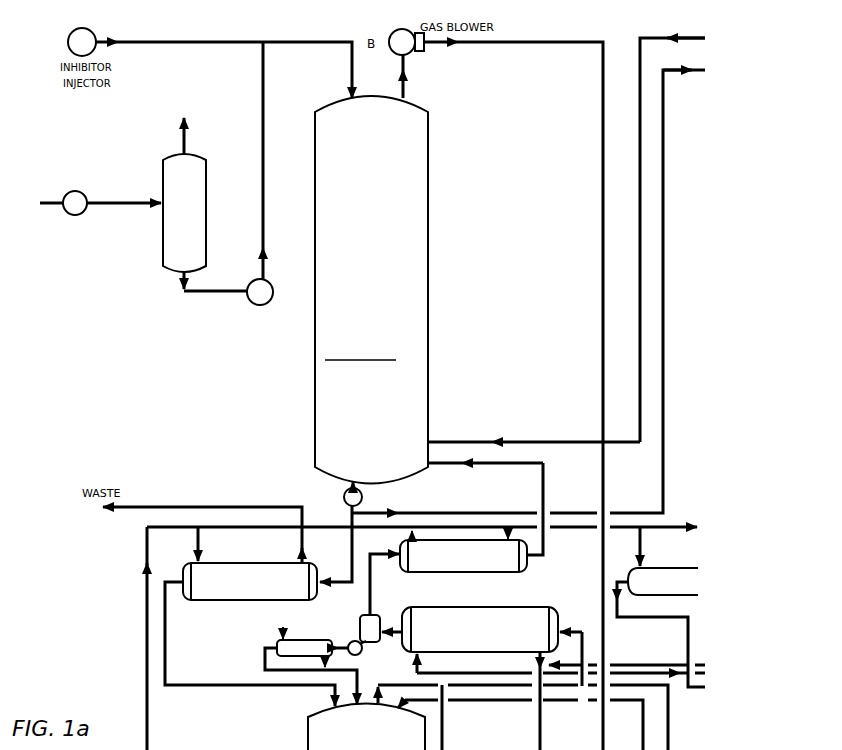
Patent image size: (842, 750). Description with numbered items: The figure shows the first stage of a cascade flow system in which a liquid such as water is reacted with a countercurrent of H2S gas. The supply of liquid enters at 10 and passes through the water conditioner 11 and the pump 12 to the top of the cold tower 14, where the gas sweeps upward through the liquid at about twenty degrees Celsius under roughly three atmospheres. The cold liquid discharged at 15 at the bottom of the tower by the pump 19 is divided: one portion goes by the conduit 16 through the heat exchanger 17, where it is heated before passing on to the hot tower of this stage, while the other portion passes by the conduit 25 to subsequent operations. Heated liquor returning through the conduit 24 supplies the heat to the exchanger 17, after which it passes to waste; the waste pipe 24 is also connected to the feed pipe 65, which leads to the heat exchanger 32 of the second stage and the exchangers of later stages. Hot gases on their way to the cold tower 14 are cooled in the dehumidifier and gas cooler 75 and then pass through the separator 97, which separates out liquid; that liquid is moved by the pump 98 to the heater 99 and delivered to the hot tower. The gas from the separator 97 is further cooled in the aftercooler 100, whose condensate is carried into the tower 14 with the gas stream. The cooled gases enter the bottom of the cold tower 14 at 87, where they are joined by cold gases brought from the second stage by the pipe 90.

The liquid supply entry 10 is at (94, 190).
The water conditioner 11 is at (196, 176).
The pump 12 is at (272, 289).
The cold tower 14 is at (415, 182).
The cold liquid discharge 15 is at (342, 489).
The conduit 16 is at (351, 534).
The heat exchanger 17 is at (270, 603).
The pump 19 is at (344, 501).
The conduit (waste pipe) 24 is at (150, 722).
The conduit 25 is at (455, 512).
The heat exchanger 32 is at (645, 573).
The feed pipe 65 is at (572, 531).
The dehumidifier and gas cooler 75 is at (520, 607).
The gas inlet 87 is at (425, 470).
The pipe 90 is at (496, 441).
The separator 97 is at (372, 623).
The pump 98 is at (363, 651).
The heater 99 is at (277, 647).
The aftercooler 100 is at (458, 573).